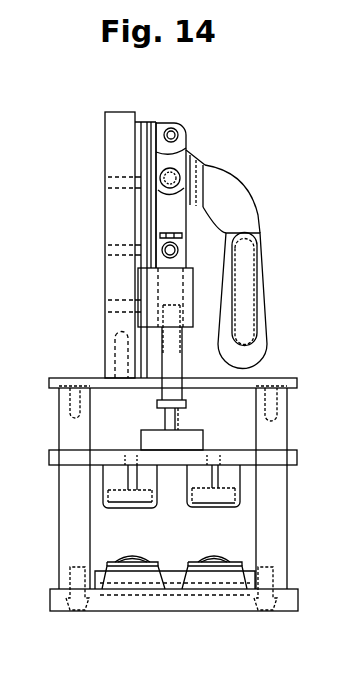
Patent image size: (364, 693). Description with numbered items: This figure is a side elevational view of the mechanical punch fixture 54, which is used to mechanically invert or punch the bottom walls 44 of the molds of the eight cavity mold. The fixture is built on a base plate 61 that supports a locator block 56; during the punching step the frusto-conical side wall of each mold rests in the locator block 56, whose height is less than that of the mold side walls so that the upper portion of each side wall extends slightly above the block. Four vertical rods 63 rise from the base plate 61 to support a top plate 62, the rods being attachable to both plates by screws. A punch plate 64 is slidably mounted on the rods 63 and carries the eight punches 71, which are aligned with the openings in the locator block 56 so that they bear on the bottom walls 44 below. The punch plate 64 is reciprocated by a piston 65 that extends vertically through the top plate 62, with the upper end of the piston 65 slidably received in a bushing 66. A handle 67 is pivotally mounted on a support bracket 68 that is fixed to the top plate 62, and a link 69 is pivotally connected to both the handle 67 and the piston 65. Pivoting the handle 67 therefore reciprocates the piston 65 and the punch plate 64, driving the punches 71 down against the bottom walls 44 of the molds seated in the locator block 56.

The bottom wall 44 is at (200, 556).
The mechanical punch fixture 54 is at (118, 112).
The locator block 56 is at (172, 583).
The base plate 61 is at (225, 605).
The top plate 62 is at (85, 378).
The vertical rods 63 is at (280, 430).
The punch plate 64 is at (297, 463).
The piston 65 is at (158, 405).
The bushing 66 is at (187, 283).
The handle 67 is at (267, 290).
The support bracket 68 is at (118, 207).
The link 69 is at (182, 222).
The punches 71 is at (243, 487).